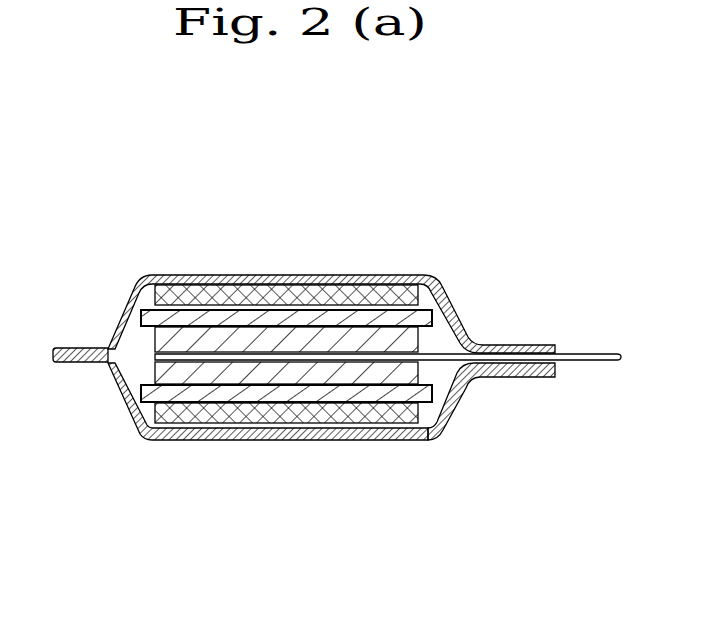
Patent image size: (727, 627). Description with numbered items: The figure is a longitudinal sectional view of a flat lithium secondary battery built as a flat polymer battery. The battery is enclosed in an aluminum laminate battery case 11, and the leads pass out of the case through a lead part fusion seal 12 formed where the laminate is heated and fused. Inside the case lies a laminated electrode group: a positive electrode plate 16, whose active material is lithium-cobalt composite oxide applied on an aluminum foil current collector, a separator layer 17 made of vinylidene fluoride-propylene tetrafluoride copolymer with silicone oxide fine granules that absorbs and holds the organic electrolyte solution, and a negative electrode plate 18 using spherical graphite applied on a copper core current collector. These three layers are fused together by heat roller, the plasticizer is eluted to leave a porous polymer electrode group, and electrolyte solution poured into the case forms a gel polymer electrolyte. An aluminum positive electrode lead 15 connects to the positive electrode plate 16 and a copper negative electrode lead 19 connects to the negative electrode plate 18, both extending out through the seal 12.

The aluminum laminate battery case 11 is at (127, 318).
The lead part fusion seal 12 is at (520, 342).
The aluminum positive electrode lead 15 is at (443, 295).
The positive electrode plate 16 is at (353, 297).
The separator layer 17 is at (438, 432).
The negative electrode plate 18 is at (272, 375).
The copper negative electrode lead 19 is at (465, 388).